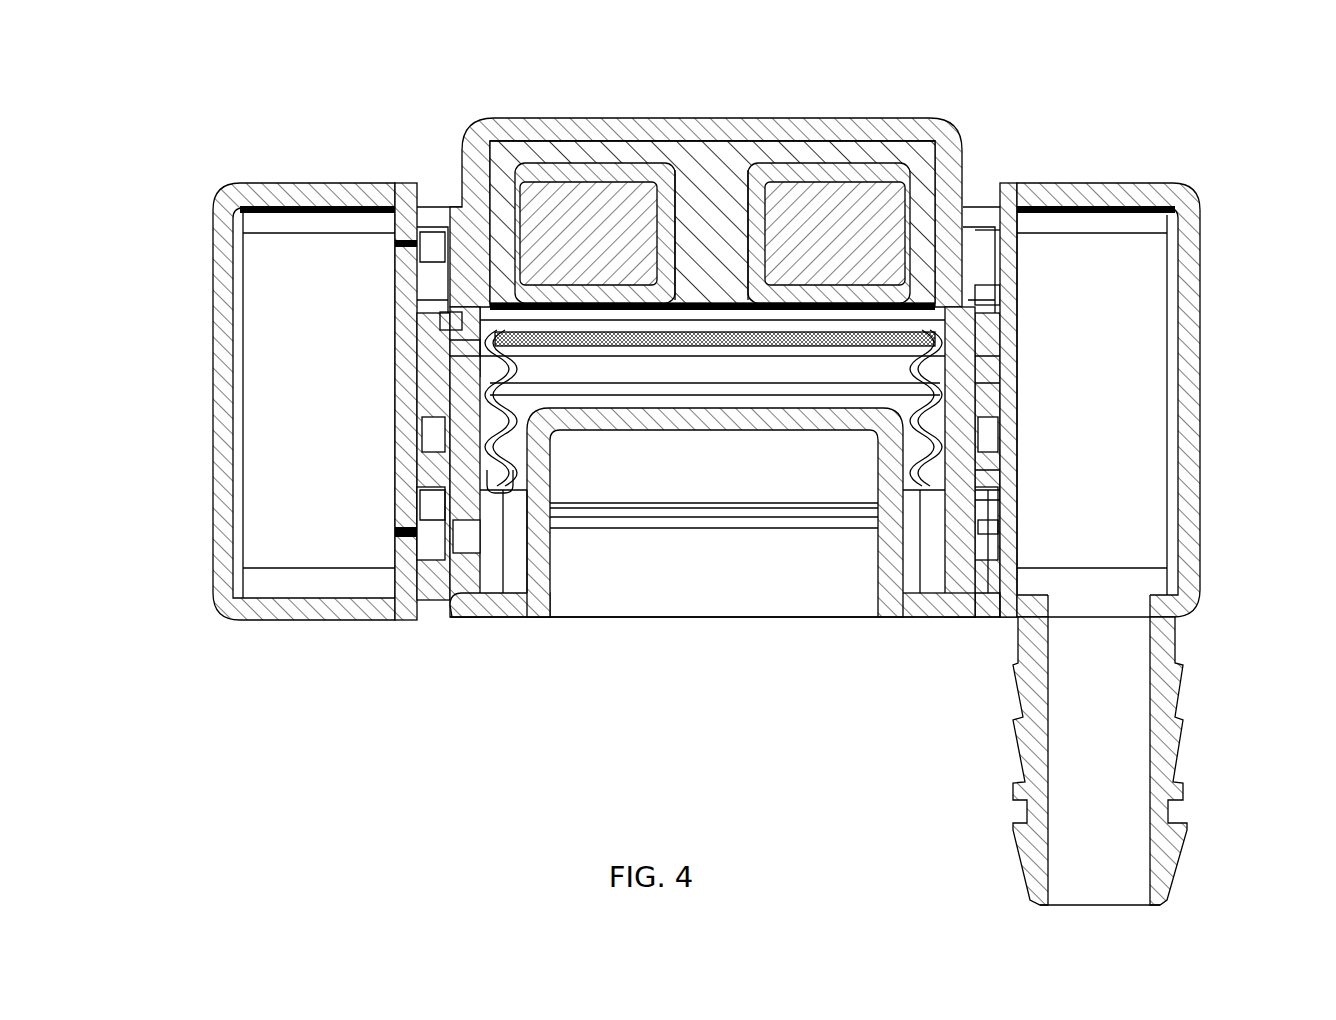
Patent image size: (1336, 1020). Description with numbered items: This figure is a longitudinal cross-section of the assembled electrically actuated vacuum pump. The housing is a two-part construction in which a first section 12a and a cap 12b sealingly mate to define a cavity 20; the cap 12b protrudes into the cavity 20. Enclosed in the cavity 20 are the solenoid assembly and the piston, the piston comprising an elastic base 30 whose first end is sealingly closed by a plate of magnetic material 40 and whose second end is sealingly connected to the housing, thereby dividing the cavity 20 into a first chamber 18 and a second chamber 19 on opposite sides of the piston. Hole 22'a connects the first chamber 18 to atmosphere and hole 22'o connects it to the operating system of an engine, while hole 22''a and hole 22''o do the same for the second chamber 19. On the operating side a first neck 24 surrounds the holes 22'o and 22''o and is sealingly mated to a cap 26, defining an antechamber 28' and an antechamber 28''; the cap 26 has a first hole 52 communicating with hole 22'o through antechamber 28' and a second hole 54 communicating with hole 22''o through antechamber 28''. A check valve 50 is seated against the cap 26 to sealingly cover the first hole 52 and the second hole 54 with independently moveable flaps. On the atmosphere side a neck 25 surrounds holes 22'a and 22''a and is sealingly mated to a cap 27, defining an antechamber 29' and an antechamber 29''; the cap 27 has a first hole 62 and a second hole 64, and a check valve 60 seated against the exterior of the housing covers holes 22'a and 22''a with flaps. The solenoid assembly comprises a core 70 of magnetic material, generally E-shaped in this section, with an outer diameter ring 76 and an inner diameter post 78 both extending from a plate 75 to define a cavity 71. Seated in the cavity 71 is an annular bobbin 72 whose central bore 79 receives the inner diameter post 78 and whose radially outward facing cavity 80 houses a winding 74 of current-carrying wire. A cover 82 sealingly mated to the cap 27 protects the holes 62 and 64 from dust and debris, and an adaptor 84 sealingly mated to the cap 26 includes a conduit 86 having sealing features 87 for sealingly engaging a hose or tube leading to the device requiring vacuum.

The first section of the housing 12a is at (930, 122).
The cap 12b is at (505, 617).
The first chamber 18 is at (868, 378).
The second chamber 19 is at (665, 388).
The cavity 20 is at (537, 175).
The hole 22'a is at (388, 323).
The hole 22''a is at (563, 531).
The hole 22'o is at (1056, 293).
The hole 22''o is at (898, 541).
The first neck 24 is at (1015, 165).
The first neck 25 is at (438, 200).
The cap 26 is at (1000, 620).
The cap 27 is at (418, 620).
The antechamber 28' is at (1043, 244).
The antechamber 28'' is at (1045, 476).
The antechamber 29' is at (409, 188).
The antechamber 29'' is at (376, 504).
The elastic base 30 is at (520, 452).
The plate of magnetic material 40 is at (765, 352).
The check valve 50 is at (1010, 384).
The first hole 52 is at (1010, 328).
The second hole 54 is at (1010, 532).
The check valve 60 is at (452, 346).
The first hole 62 is at (408, 246).
The second hole 64 is at (407, 532).
The core 70 is at (878, 140).
The cavity 71 is at (598, 168).
The bobbin 72 is at (655, 182).
The winding 74 is at (640, 262).
The plate 75 is at (800, 162).
The outer diameter ring 76 is at (975, 215).
The inner diameter post 78 is at (705, 235).
The central bore 79 is at (745, 215).
The radially outward facing cavity 80 is at (880, 185).
The cover 82 is at (212, 520).
The adaptor 84 is at (1203, 306).
The conduit 86 is at (1165, 888).
The sealing features 87 is at (1188, 728).